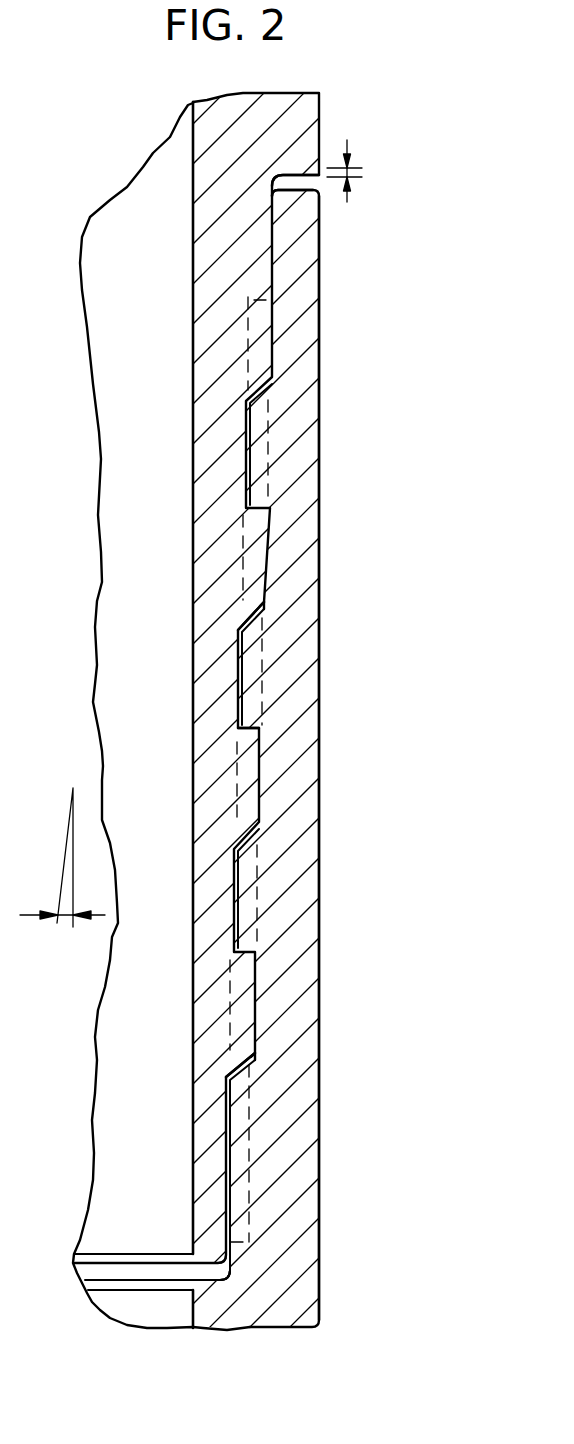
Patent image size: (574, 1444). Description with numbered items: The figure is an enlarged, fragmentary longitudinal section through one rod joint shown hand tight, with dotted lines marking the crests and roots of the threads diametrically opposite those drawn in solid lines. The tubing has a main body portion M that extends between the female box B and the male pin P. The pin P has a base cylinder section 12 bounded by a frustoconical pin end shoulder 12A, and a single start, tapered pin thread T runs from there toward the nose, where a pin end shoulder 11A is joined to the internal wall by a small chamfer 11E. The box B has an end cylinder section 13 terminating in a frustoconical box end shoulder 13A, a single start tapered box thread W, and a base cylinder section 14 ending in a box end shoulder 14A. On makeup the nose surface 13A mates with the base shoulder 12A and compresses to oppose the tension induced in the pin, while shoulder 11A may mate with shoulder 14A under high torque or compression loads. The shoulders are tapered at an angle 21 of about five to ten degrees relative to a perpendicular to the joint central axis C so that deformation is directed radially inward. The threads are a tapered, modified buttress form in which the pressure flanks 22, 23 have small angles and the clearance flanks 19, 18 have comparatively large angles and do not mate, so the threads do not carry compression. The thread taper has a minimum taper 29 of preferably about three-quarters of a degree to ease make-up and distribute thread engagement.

The base cylinder section 12 is at (268, 228).
The pin end shoulder 12A is at (293, 173).
The end cylinder section 13 is at (302, 235).
The box end shoulder 13A is at (292, 190).
The angle 21 is at (360, 173).
The pin thread T is at (243, 462).
The clearance flank 18 is at (242, 598).
The clearance flank 19 is at (262, 612).
The pressure flank 22 is at (244, 720).
The pressure flank 23 is at (262, 735).
The box B is at (303, 542).
The pin P is at (192, 704).
The box thread W is at (238, 888).
The joint central axis C is at (72, 854).
The minimum taper 29 is at (65, 922).
The base cylinder section 14 is at (240, 1261).
The box end shoulder 14A is at (200, 1291).
The chamfer 11E is at (110, 1255).
The pin end shoulder 11A is at (202, 1263).
The main body portion M is at (103, 1303).